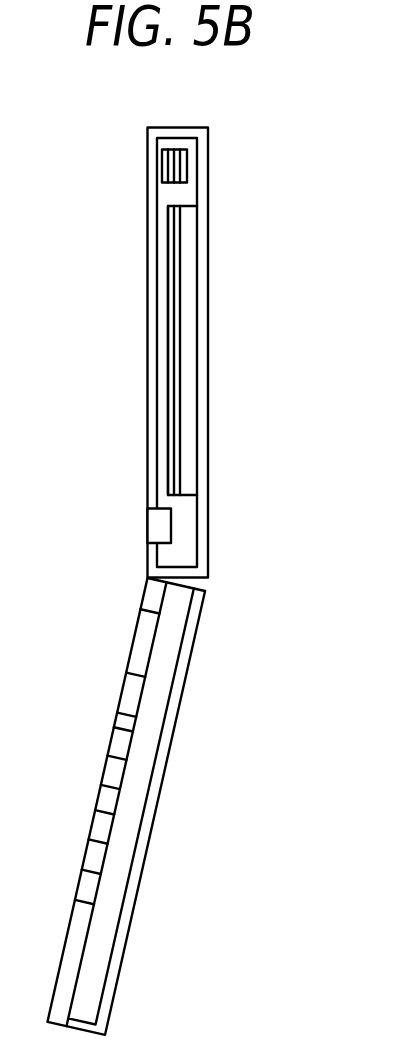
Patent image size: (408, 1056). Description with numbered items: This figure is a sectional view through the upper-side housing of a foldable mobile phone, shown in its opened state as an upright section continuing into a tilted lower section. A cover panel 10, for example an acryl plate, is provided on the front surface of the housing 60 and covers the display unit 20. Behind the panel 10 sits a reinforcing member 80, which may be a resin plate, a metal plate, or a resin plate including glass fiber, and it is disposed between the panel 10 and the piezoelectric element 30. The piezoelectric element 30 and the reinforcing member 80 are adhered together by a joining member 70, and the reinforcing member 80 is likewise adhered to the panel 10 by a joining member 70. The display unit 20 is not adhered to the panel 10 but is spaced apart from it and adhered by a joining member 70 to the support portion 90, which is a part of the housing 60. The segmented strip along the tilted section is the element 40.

The panel 10 is at (151, 203).
The display unit 20 is at (171, 326).
The piezoelectric element 30 is at (183, 160).
The support member 40 is at (153, 525).
The housing 60 is at (202, 195).
The joining member 70 is at (174, 149).
The reinforcing member 80 is at (166, 170).
The support portion 90 is at (189, 256).